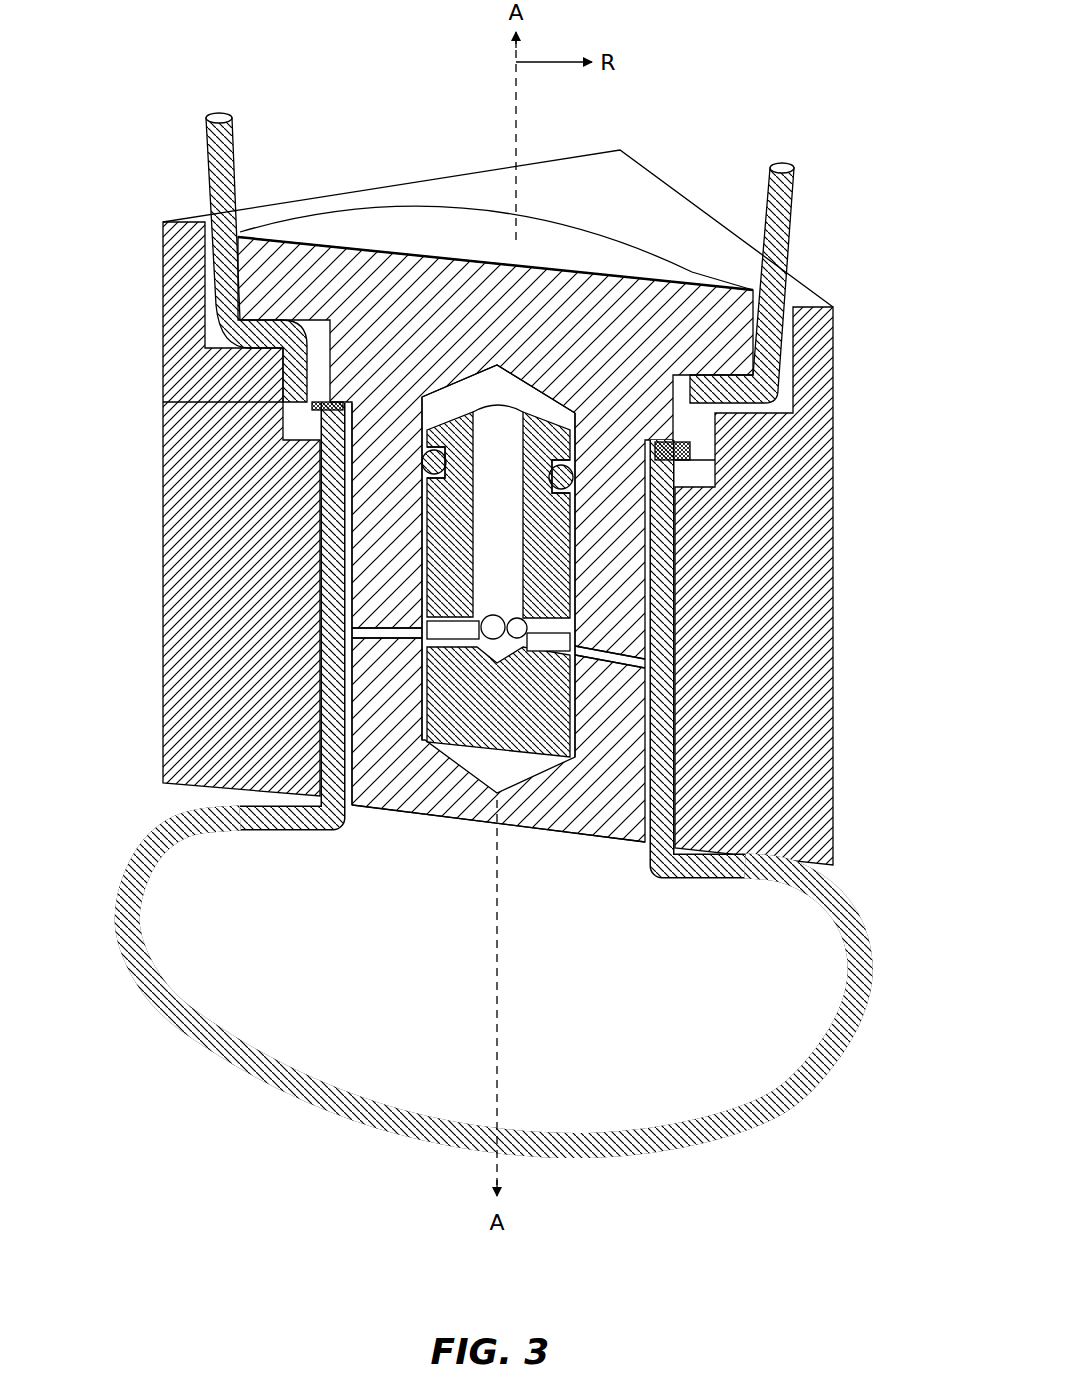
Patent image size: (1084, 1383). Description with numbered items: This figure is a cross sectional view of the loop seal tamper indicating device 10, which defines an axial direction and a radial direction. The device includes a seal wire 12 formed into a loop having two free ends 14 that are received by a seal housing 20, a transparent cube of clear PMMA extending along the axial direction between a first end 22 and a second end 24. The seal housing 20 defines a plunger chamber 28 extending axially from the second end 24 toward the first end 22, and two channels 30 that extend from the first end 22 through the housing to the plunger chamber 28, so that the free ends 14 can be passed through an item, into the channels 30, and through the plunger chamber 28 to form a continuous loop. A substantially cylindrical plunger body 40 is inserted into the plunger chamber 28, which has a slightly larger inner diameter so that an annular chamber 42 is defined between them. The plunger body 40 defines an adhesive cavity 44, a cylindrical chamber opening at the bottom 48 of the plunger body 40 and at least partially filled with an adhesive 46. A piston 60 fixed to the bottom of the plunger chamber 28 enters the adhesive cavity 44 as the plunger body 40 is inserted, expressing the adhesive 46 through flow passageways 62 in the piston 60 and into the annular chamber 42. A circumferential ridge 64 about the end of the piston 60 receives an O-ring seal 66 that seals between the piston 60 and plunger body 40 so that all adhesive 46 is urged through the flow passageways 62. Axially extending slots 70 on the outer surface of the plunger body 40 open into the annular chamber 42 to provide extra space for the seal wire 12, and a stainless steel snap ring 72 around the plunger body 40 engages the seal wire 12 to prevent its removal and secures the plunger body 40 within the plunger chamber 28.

The loop seal tamper indicating device 10 is at (880, 157).
The seal wire 12 is at (790, 1100).
The free ends 14 is at (238, 124).
The seal housing 20 is at (795, 656).
The first end 22 is at (596, 845).
The second end 24 is at (815, 282).
The plunger chamber 28 is at (722, 487).
The channels 30 is at (352, 770).
The plunger body 40 is at (420, 278).
The annular chamber 42 is at (345, 487).
The adhesive cavity 44 is at (512, 393).
The adhesive 46 is at (460, 398).
The bottom 48 is at (632, 672).
The piston 60 is at (546, 593).
The flow passageways 62 is at (427, 632).
The circumferential ridge 64 is at (560, 545).
The O-ring seal 66 is at (574, 485).
The axially extending slots 70 is at (664, 446).
The snap ring 72 is at (330, 406).